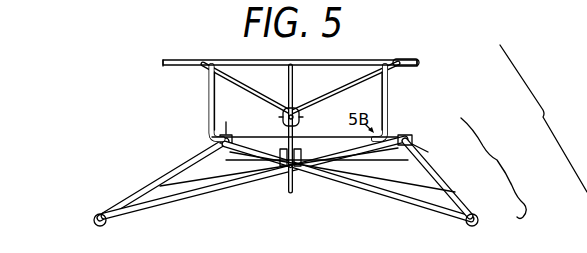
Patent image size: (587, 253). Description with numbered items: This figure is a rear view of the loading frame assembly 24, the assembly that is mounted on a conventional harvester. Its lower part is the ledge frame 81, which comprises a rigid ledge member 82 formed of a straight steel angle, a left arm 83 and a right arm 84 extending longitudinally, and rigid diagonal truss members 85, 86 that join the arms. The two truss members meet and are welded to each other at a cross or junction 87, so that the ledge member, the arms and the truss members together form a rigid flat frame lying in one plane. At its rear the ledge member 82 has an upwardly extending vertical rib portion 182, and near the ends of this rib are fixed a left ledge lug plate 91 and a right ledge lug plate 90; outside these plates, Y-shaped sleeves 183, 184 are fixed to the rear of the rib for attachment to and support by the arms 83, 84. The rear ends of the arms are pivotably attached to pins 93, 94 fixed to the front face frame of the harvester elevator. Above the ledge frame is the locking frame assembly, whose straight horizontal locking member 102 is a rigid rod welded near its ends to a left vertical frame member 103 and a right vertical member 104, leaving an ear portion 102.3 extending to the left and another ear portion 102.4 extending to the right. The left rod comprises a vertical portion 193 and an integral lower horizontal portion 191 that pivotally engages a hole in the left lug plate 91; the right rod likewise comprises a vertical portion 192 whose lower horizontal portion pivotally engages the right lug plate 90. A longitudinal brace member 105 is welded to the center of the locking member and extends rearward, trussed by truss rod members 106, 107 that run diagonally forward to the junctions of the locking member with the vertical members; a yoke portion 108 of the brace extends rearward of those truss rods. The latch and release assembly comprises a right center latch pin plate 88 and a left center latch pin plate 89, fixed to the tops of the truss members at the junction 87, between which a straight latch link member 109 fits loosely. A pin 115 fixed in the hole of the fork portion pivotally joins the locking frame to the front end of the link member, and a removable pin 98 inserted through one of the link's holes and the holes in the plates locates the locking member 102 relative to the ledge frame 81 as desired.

The loading frame assembly 24 is at (543, 118).
The ledge frame 81 is at (500, 168).
The ledge member 82 is at (235, 166).
The left arm 83 is at (157, 180).
The right arm 84 is at (367, 182).
The diagonal truss member 85 is at (183, 194).
The diagonal truss member 86 is at (369, 188).
The junction 87 is at (313, 158).
The right center latch pin plate 88 is at (311, 168).
The left center latch pin plate 89 is at (285, 167).
The right ledge lug plate 90 is at (342, 172).
The left ledge lug plate 91 is at (203, 152).
The pin 93 is at (110, 228).
The pin 94 is at (463, 220).
The removable pin 98 is at (280, 166).
The horizontal locking member 102 is at (250, 62).
The ear portion 102.3 is at (171, 63).
The ear portion 102.4 is at (420, 63).
The left vertical frame member 103 is at (208, 84).
The right vertical member 104 is at (388, 94).
The longitudinal brace member 105 is at (345, 87).
The truss rod member 106 is at (246, 88).
The truss rod member 107 is at (397, 51).
The yoke portion 108 is at (276, 120).
The latch link member 109 is at (291, 194).
The pin 115 is at (303, 118).
The rib portion 182 is at (414, 140).
The Y-shaped sleeve 183 is at (192, 138).
The Y-shaped sleeve 184 is at (424, 151).
The lower horizontal portion 191 is at (228, 134).
The vertical portion 192 is at (388, 116).
The vertical portion 193 is at (208, 108).